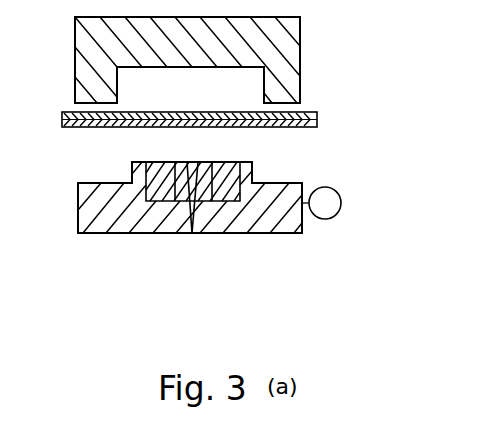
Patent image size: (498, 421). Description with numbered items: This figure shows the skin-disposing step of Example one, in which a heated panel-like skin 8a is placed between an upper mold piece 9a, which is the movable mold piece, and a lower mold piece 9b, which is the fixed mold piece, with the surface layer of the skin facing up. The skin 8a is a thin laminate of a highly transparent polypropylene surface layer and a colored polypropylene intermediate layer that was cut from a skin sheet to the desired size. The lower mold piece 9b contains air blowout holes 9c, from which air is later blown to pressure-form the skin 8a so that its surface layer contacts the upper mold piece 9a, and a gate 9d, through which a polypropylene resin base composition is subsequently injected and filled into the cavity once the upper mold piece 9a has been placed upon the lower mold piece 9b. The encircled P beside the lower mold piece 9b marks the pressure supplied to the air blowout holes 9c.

The upper mold piece 9a is at (288, 58).
The panel-like skin 8a is at (303, 110).
The lower mold piece 9b is at (263, 226).
The air blowout holes 9c is at (240, 163).
The gate 9d is at (192, 233).
The pressure P is at (321, 203).